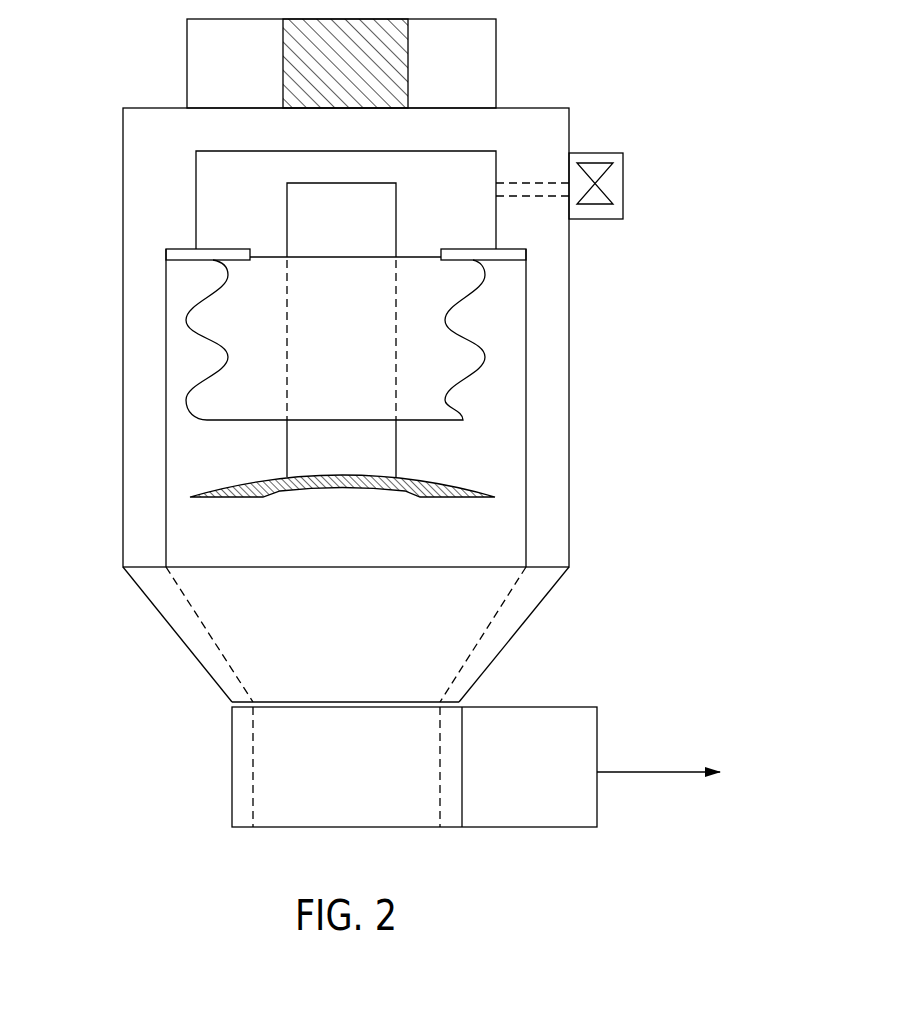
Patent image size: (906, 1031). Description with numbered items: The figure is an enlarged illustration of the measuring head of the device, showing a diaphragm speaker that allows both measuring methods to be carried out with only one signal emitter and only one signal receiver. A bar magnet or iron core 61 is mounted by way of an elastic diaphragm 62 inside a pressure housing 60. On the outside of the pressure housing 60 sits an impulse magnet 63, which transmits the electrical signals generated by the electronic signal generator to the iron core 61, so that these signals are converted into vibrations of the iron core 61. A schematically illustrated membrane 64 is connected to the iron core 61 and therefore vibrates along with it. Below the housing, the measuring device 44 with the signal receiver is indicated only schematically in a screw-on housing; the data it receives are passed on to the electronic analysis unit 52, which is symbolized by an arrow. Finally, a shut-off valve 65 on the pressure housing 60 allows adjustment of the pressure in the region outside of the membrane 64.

The pressure housing 60 is at (570, 542).
The bar magnet or iron core 61 is at (330, 220).
The elastic diaphragm 62 is at (480, 355).
The impulse magnet 63 is at (463, 63).
The membrane 64 is at (483, 483).
The shut-off valve 65 is at (628, 151).
The measuring device 44 is at (597, 718).
The electronic analysis unit 52 is at (643, 773).